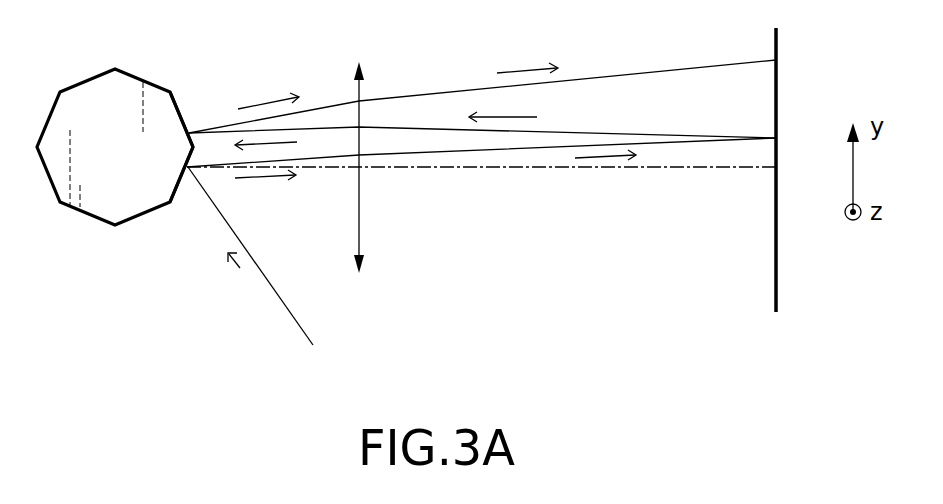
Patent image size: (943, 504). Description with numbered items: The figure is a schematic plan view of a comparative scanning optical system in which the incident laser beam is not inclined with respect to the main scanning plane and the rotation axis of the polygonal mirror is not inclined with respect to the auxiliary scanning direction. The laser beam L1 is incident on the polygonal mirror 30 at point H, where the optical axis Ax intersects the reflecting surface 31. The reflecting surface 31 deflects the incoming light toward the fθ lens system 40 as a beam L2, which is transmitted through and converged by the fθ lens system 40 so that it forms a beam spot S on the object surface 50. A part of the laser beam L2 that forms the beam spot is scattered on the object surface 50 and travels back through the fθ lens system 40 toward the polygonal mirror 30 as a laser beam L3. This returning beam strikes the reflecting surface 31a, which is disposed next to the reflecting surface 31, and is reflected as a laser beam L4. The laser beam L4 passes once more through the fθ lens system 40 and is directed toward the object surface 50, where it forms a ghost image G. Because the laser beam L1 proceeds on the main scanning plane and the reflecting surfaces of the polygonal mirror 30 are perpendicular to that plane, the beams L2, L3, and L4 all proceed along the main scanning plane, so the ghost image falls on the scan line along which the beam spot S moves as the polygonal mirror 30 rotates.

The polygonal mirror 30 is at (91, 220).
The reflecting surface 31 is at (181, 190).
The reflecting surface 31a is at (181, 114).
The fθ lens system 40 is at (360, 90).
The object surface 50 is at (818, 282).
The laser beam L1 is at (288, 313).
The laser beam L2 is at (438, 156).
The laser beam L3 is at (641, 132).
The laser beam L4 is at (610, 70).
The optical axis Ax is at (702, 180).